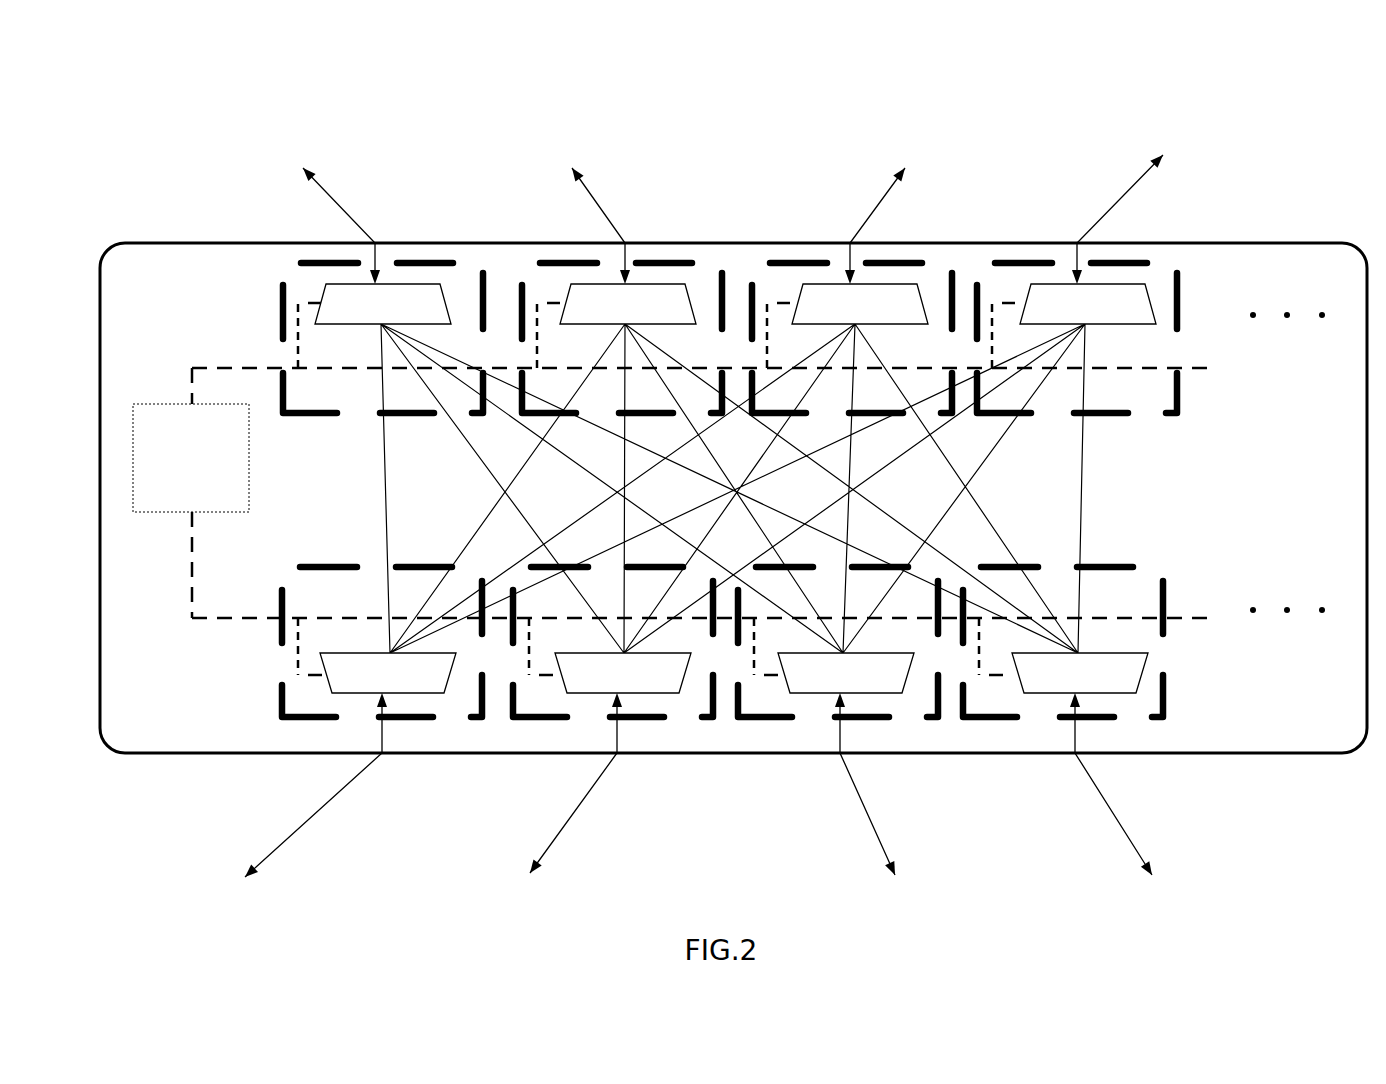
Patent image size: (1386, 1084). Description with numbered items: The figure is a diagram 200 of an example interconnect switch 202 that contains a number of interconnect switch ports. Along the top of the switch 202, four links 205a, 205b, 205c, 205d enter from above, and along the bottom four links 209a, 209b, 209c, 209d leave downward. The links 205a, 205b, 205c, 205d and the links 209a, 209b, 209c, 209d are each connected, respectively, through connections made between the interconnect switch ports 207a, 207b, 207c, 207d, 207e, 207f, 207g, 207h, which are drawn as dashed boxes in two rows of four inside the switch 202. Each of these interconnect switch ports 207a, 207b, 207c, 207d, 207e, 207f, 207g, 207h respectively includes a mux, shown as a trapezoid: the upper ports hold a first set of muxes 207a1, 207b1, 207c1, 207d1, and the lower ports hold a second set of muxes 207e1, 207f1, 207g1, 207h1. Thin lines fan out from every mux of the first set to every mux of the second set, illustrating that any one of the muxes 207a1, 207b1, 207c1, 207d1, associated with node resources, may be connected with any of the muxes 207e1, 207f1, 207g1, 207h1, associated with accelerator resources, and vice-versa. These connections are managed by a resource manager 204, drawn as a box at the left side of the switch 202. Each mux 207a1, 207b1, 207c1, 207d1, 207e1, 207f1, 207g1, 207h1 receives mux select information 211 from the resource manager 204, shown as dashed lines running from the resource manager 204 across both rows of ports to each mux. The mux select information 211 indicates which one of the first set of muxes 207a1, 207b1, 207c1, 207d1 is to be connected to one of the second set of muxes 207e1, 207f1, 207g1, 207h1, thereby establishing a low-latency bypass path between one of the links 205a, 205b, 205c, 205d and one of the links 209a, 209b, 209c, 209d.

The diagram 200 is at (1233, 70).
The interconnect switch 202 is at (1298, 243).
The resource manager 204 is at (247, 458).
The link 205a is at (347, 209).
The link 205b is at (601, 207).
The link 205c is at (885, 210).
The link 205d is at (1115, 209).
The interconnect switch port 207a is at (277, 313).
The interconnect switch port 207b is at (545, 262).
The interconnect switch port 207c is at (782, 260).
The interconnect switch port 207d is at (1015, 258).
The interconnect switch port 207e is at (278, 683).
The interconnect switch port 207f is at (655, 723).
The interconnect switch port 207g is at (877, 727).
The interconnect switch port 207h is at (1108, 727).
The mux 207a1 is at (383, 304).
The mux 207b1 is at (628, 304).
The mux 207c1 is at (860, 304).
The mux 207d1 is at (1088, 304).
The mux 207e1 is at (388, 673).
The mux 207f1 is at (623, 673).
The mux 207g1 is at (846, 673).
The mux 207h1 is at (1080, 673).
The link 209a is at (327, 805).
The link 209b is at (572, 818).
The link 209c is at (880, 825).
The link 209d is at (1113, 820).
The mux select information 211 is at (195, 310).